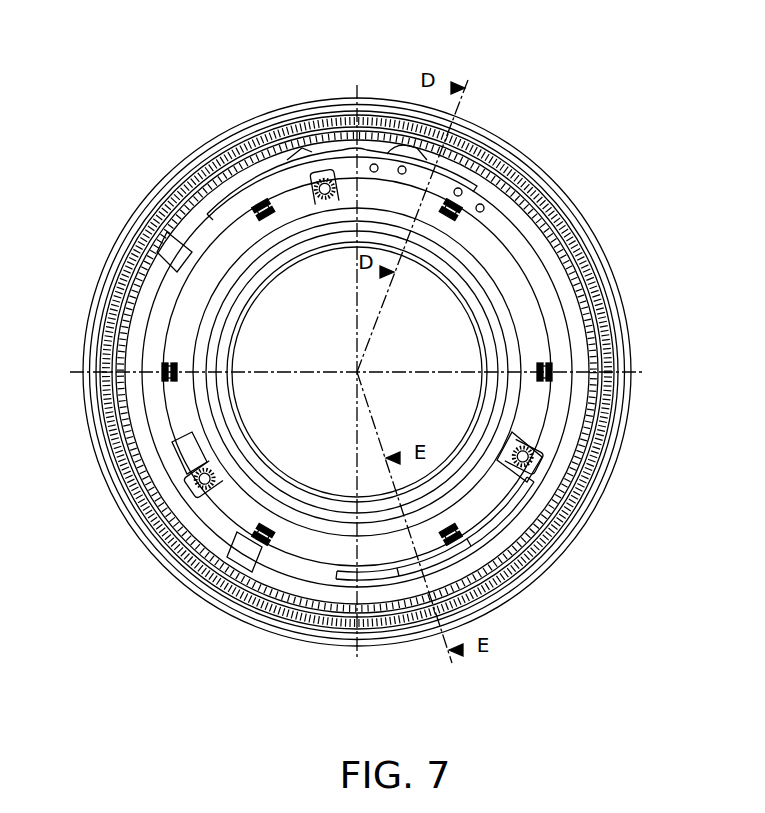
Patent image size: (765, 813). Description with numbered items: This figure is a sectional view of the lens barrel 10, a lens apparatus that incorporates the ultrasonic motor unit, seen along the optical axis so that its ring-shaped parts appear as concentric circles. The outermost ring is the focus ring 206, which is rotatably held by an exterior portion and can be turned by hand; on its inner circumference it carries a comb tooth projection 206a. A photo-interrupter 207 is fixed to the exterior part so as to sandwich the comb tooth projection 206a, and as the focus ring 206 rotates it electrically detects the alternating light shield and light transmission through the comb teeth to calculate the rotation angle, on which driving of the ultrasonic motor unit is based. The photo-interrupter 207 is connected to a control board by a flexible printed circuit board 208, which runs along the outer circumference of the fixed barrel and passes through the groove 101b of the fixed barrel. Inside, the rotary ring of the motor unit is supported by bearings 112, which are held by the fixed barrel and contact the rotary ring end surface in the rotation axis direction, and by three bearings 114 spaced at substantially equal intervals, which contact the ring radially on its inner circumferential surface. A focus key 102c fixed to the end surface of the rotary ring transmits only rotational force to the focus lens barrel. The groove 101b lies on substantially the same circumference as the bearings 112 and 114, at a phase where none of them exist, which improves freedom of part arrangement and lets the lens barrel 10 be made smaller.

The lens barrel 10 is at (638, 33).
The focus ring 206 is at (357, 352).
The comb tooth projection 206a is at (357, 420).
The focus key 102c is at (357, 344).
The flexible printed circuit board 208 is at (121, 235).
The photo-interrupter 207 is at (435, 595).
The bearing 112 is at (375, 351).
The bearing 114 is at (368, 275).
The groove 101b is at (357, 372).